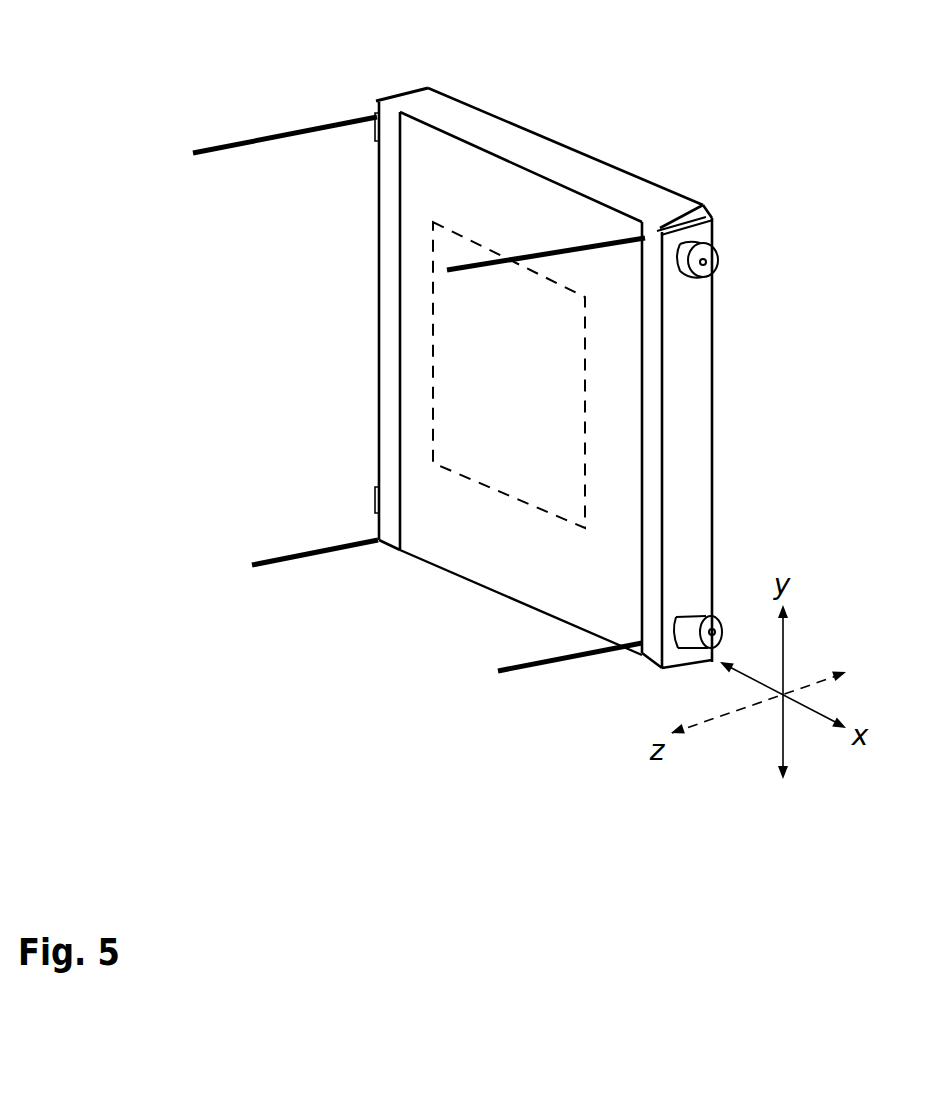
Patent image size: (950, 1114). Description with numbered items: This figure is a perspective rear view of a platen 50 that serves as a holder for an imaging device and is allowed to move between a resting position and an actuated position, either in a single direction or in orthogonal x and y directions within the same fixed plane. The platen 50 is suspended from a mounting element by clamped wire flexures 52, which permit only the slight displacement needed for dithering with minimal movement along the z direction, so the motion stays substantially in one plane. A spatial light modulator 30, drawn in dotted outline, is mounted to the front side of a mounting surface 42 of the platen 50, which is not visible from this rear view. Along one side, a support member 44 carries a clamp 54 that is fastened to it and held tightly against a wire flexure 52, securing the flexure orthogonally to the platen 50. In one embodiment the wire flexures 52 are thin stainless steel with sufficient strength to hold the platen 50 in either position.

The spatial light modulator 30 is at (432, 318).
The mounting surface 42 is at (593, 157).
The support member 44 is at (468, 106).
The platen 50 is at (730, 395).
The wire flexures 52 is at (272, 550).
The clamp 54 is at (713, 500).